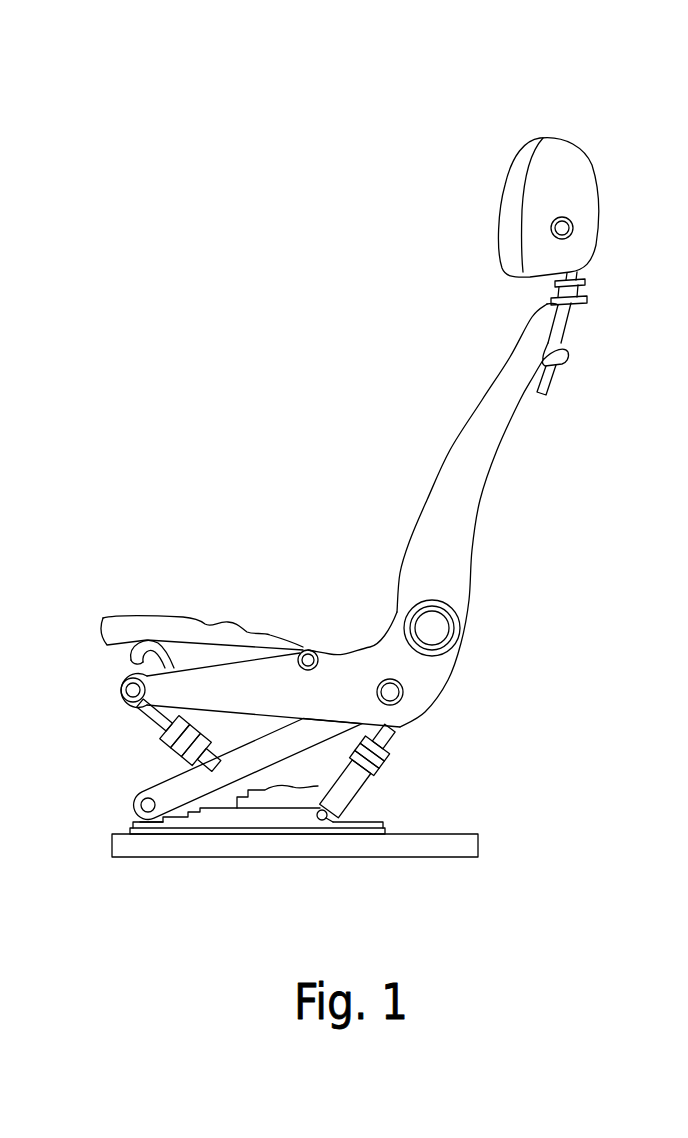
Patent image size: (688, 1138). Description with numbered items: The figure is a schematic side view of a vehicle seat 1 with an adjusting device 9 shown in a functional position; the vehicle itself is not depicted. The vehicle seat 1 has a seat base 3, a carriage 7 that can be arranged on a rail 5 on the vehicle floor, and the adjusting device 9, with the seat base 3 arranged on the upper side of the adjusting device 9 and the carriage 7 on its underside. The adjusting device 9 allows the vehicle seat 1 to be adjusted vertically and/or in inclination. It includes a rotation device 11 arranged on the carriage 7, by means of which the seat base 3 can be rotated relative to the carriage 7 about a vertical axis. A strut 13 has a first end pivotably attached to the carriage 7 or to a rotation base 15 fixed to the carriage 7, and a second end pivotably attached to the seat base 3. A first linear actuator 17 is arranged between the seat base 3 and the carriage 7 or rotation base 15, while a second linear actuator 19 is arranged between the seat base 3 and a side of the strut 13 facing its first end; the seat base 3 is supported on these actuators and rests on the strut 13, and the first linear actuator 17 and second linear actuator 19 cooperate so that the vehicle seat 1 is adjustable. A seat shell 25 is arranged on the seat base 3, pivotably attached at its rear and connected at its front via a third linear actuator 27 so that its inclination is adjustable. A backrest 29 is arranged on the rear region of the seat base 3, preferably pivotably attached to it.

The vehicle seat 1 is at (483, 113).
The seat base 3 is at (120, 680).
The rail 5 is at (170, 850).
The carriage 7 is at (128, 828).
The adjusting device 9 is at (504, 745).
The rotation device 11 is at (293, 803).
The strut 13 is at (172, 788).
The rotation base 15 is at (365, 820).
The first linear actuator 17 is at (384, 745).
The second linear actuator 19 is at (160, 741).
The seat shell 25 is at (290, 650).
The third linear actuator 27 is at (147, 640).
The backrest 29 is at (528, 380).